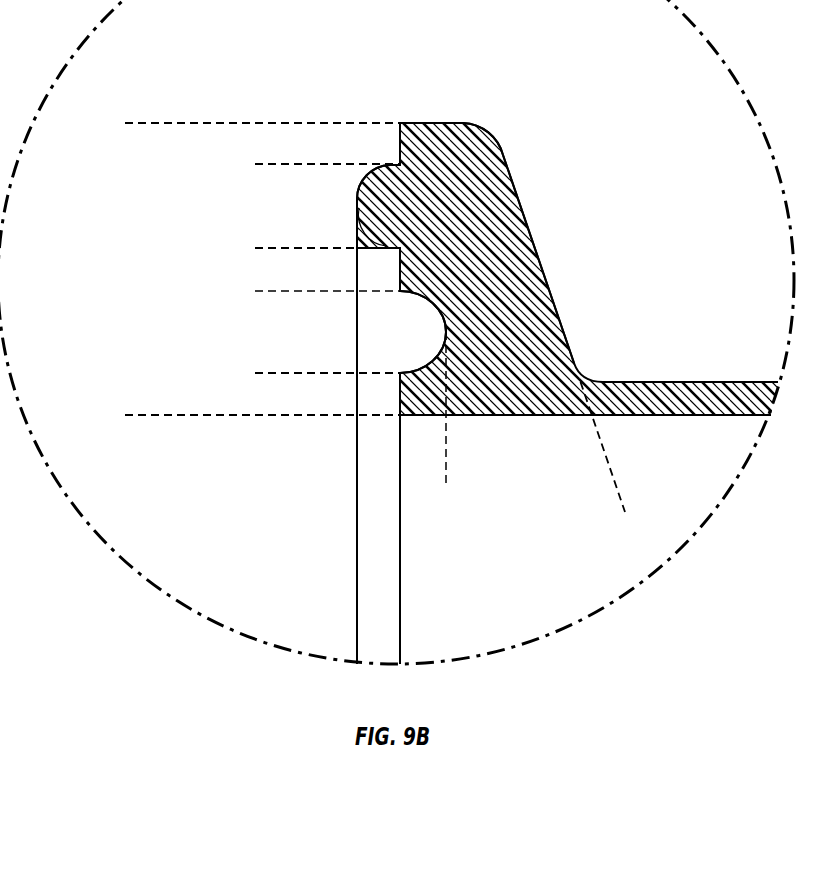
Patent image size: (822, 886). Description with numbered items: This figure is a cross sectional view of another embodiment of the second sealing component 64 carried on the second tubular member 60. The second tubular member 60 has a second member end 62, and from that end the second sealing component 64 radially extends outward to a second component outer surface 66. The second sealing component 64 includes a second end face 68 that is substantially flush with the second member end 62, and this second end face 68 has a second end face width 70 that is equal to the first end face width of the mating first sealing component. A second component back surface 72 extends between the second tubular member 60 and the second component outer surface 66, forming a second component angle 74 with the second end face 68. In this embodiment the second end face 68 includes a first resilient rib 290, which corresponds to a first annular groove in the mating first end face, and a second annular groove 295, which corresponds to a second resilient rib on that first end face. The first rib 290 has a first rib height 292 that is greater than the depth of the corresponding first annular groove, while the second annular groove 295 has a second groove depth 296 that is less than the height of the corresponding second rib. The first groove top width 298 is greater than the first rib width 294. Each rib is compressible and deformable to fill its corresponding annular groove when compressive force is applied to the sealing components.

The second tubular member 60 is at (668, 398).
The second member end 62 is at (400, 395).
The second sealing component 64 is at (532, 308).
The second component outer surface 66 is at (440, 123).
The second end face 68 is at (400, 153).
The second end face width 70 is at (131, 124).
The second component back surface 72 is at (533, 249).
The second component angle 74 is at (625, 515).
The first resilient rib 290 is at (372, 207).
The first rib height 292 is at (427, 605).
The first rib width 294 is at (262, 165).
The second annular groove 295 is at (422, 369).
The second groove depth 296 is at (375, 479).
The first groove top width 298 is at (262, 292).